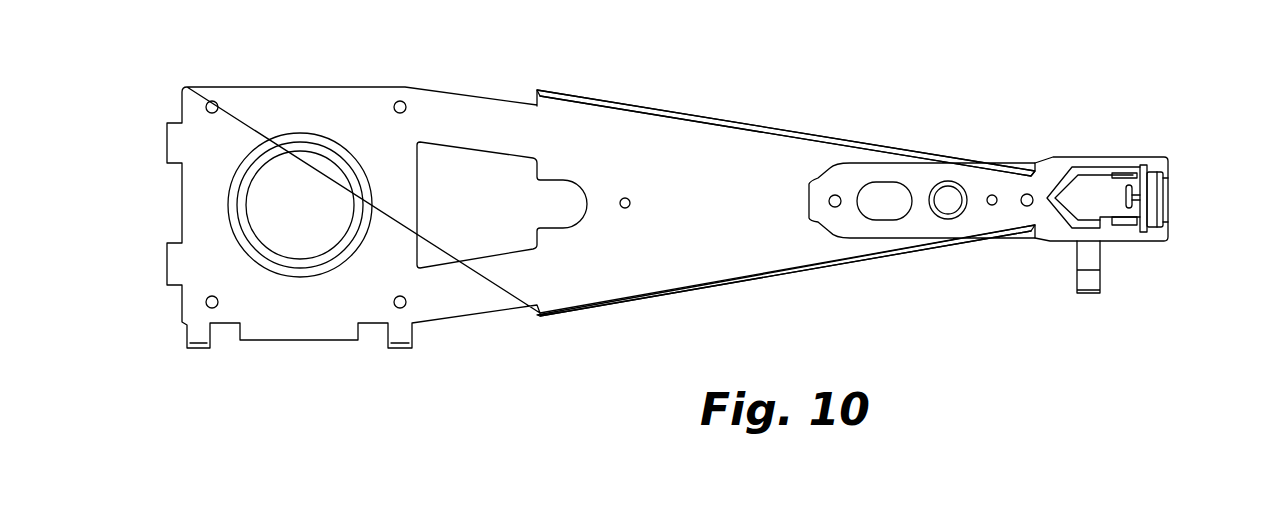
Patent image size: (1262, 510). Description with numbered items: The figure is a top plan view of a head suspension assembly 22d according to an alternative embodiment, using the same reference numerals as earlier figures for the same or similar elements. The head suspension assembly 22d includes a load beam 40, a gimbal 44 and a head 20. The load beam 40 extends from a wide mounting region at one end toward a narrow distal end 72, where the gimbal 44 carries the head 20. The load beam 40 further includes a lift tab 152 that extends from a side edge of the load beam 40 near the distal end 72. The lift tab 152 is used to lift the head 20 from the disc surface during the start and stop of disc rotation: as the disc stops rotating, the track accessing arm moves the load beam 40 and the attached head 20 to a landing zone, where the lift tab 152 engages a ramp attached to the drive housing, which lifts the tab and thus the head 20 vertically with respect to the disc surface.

The head suspension assembly 22d is at (786, 100).
The load beam 40 is at (657, 94).
The gimbal 44 is at (1059, 145).
The head 20 is at (1172, 180).
The distal end 72 is at (1168, 214).
The lift tab 152 is at (1077, 261).